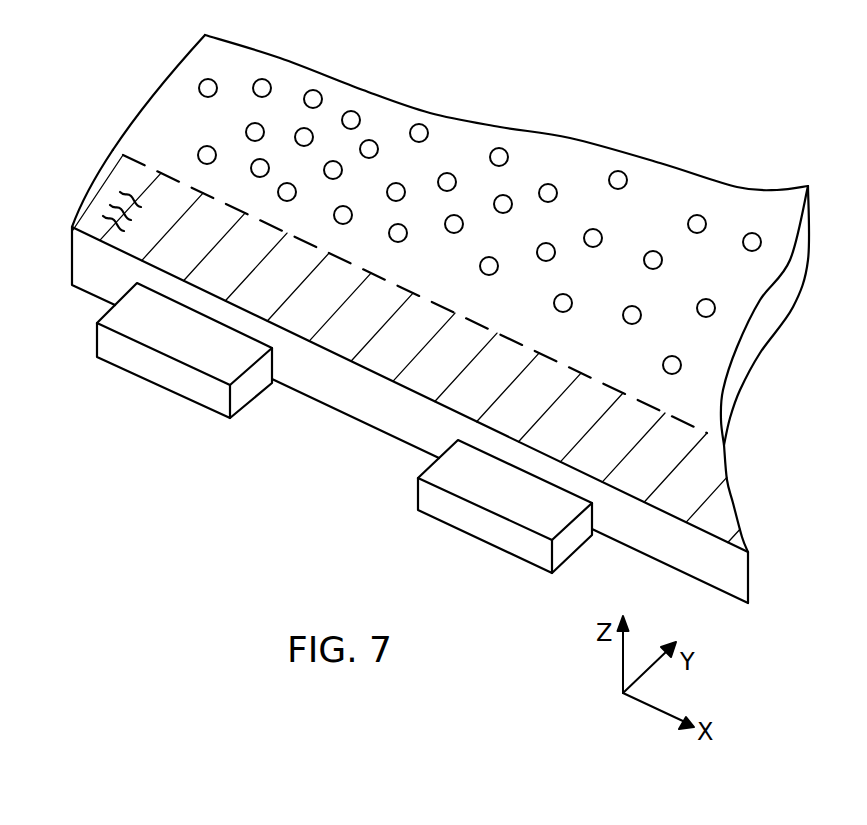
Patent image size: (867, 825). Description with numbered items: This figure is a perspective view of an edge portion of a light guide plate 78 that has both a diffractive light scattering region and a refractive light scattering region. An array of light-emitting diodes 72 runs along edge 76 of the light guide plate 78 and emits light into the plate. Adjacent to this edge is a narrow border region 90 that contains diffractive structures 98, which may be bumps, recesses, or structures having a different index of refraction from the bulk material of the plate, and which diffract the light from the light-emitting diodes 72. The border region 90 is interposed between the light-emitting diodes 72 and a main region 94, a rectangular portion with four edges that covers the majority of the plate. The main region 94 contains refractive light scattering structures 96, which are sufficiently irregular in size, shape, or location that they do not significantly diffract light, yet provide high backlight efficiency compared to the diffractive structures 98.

The light-emitting diodes 72 is at (177, 377).
The edge 76 is at (348, 393).
The light guide plate 78 is at (732, 482).
The border region 90 is at (100, 140).
The main region 94 is at (187, 29).
The refractive light scattering structures 96 is at (313, 92).
The diffractive structures 98 is at (115, 205).